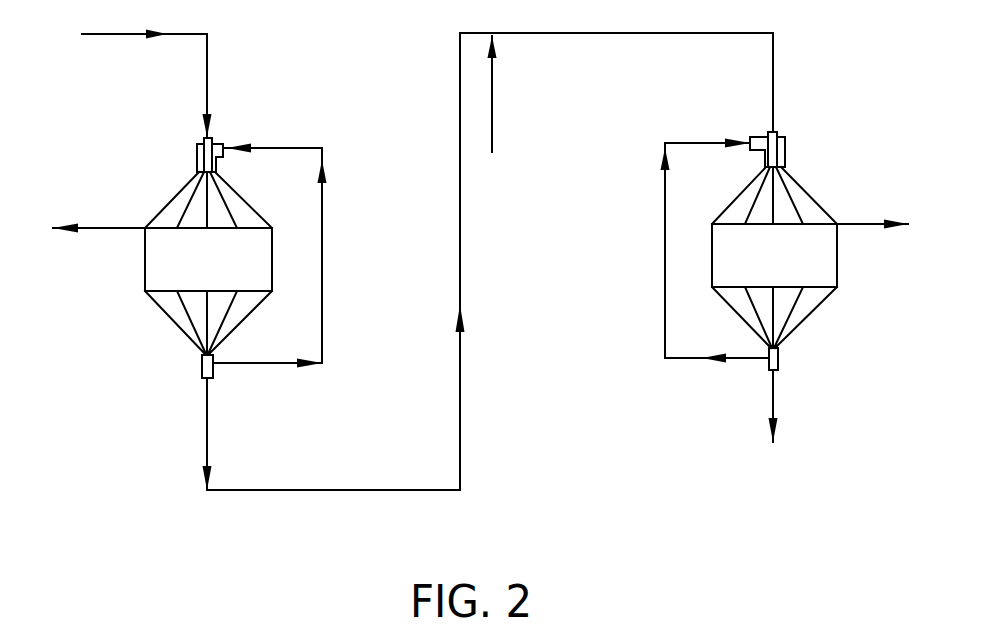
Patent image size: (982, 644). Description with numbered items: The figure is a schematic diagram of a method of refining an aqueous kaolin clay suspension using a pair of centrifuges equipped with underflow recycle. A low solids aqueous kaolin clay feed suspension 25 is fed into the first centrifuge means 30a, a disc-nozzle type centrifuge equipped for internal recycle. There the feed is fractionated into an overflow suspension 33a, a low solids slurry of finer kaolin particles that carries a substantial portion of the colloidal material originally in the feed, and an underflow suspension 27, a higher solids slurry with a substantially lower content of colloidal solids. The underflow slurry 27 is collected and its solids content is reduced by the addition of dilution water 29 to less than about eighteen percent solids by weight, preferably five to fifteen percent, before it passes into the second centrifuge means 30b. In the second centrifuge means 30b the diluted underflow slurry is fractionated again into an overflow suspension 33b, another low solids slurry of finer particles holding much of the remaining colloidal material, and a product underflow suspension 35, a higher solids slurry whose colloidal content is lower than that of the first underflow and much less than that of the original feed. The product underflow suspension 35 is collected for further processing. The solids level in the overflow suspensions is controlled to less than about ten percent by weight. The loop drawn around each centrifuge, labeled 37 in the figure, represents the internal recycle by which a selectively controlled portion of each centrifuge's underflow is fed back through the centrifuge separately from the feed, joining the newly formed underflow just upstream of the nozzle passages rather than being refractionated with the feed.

The aqueous kaolin clay feed suspension 25 is at (137, 36).
The underflow suspension 27 is at (207, 431).
The dilution water 29 is at (493, 133).
The first centrifuge means 30a is at (237, 278).
The second centrifuge means 30b is at (801, 272).
The overflow suspension 33a is at (112, 229).
The overflow suspension 33b is at (902, 221).
The product underflow suspension 35 is at (774, 399).
The recycle loop line 37 is at (322, 244).